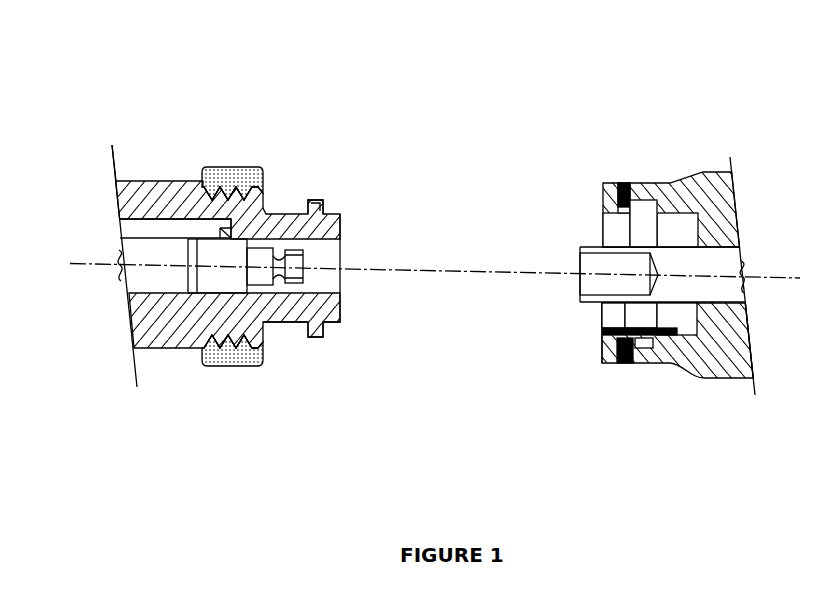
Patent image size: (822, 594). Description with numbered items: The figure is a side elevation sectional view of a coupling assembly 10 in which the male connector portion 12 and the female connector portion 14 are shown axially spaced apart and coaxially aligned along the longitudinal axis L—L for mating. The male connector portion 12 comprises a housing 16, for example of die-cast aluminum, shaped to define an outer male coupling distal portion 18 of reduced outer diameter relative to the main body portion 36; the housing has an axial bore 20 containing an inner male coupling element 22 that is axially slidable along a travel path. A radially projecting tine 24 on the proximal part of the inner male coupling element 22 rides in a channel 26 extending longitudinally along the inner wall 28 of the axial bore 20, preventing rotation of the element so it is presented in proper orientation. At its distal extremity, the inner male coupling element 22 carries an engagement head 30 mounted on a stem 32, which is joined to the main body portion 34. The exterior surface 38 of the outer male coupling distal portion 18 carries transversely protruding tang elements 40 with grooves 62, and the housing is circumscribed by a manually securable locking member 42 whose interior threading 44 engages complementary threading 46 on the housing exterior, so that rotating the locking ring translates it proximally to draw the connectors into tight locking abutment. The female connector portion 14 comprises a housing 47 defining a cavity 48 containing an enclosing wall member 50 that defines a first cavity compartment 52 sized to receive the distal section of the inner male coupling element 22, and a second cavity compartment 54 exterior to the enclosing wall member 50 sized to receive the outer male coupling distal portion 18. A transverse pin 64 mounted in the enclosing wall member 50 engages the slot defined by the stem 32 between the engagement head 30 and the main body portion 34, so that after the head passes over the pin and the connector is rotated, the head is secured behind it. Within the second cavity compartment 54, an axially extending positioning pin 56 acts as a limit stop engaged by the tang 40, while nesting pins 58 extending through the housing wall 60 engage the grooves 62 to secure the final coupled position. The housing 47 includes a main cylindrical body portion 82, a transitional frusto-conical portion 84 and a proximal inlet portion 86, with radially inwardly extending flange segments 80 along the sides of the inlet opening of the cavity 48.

The coupling assembly 10 is at (472, 98).
The male connector portion 12 is at (129, 120).
The female connector portion 14 is at (738, 131).
The housing 16 is at (137, 385).
The outer male coupling distal portion 18 is at (292, 175).
The axial bore 20 is at (320, 263).
The inner male coupling element 22 is at (213, 278).
The radially projecting tine 24 is at (152, 205).
The channel 26 is at (137, 231).
The inner wall 28 is at (323, 242).
The engagement head 30 is at (302, 277).
The stem 32 is at (280, 323).
The main body portion 34 is at (262, 273).
The main body portion 36 is at (113, 200).
The exterior surface 38 is at (308, 337).
The tang element 40 is at (327, 205).
The locking member 42 is at (205, 172).
The threading 44 is at (228, 168).
The threading 46 is at (250, 200).
The housing 47 is at (680, 183).
The cavity 48 is at (553, 357).
The enclosing wall member 50 is at (580, 248).
The first cavity compartment 52 is at (587, 287).
The second cavity compartment 54 is at (615, 233).
The positioning pin 56 is at (603, 318).
The nesting pin 58 is at (640, 185).
The housing wall 60 is at (641, 358).
The groove 62 is at (333, 322).
The transverse pin 64 is at (625, 292).
The flange segment 80 is at (618, 188).
The main cylindrical body portion 82 is at (736, 382).
The transitional frusto-conical portion 84 is at (688, 380).
The proximal inlet portion 86 is at (606, 363).